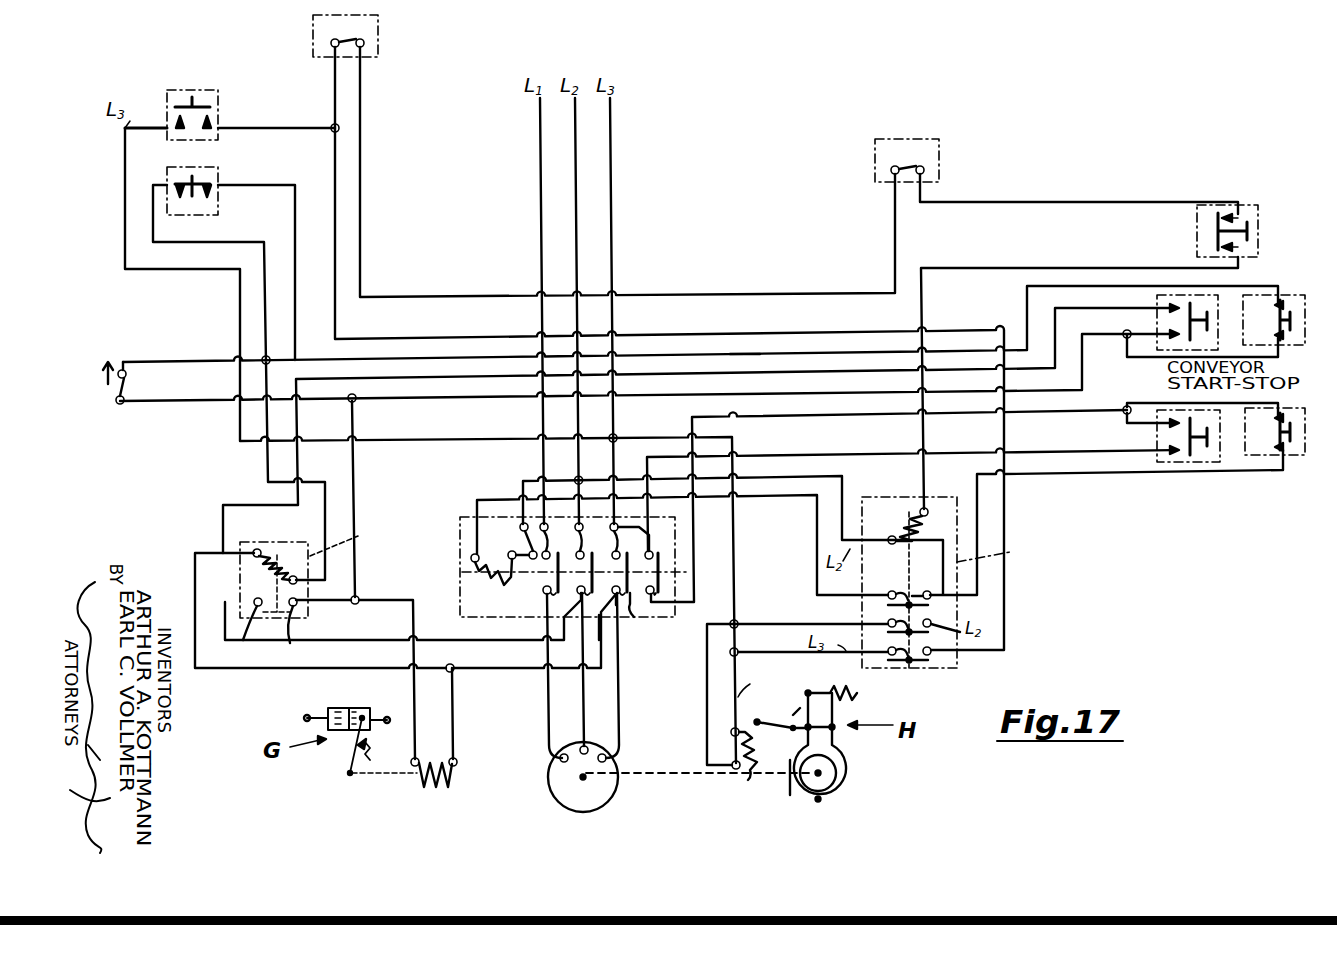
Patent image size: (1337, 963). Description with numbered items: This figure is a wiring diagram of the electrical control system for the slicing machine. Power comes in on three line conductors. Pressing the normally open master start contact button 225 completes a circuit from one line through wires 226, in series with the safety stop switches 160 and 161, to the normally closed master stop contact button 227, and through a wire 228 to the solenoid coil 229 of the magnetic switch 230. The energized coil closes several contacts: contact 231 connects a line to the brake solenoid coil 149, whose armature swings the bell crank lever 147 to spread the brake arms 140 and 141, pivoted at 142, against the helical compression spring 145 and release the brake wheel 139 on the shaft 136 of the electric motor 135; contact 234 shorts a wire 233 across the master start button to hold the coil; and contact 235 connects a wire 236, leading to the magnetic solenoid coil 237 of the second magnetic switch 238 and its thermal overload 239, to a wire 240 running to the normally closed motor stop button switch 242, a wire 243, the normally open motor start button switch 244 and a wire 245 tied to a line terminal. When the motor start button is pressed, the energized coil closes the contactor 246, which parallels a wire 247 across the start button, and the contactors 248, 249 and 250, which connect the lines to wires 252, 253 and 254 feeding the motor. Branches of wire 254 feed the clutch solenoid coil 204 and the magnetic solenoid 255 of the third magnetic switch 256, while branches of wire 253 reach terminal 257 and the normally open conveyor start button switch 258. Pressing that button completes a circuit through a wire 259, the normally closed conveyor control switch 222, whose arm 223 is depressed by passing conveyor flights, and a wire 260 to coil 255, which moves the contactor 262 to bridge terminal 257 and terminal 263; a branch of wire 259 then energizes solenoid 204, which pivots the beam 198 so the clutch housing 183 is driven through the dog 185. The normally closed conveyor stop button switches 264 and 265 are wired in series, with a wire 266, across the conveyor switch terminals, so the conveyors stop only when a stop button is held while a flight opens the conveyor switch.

The electric motor 135 is at (606, 802).
The motor shaft 136 is at (652, 776).
The brake wheel 139 is at (838, 783).
The brake arm 140 is at (790, 798).
The brake arm 141 is at (835, 747).
The pivot 142 is at (821, 801).
The helical compression spring 145 is at (834, 688).
The bell crank lever 147 is at (765, 718).
The brake solenoid coil 149 is at (750, 781).
The safety stop switch 160 is at (312, 24).
The safety stop switch 161 is at (910, 138).
The clutch housing 183 is at (362, 708).
The dog 185 is at (328, 703).
The beam 198 is at (348, 773).
The clutch solenoid coil 204 is at (437, 790).
The conveyor control switch 222 is at (118, 405).
The switch arm 223 is at (104, 362).
The master start contact button 225 is at (220, 100).
The wires 226 is at (268, 130).
The master stop contact button 227 is at (1196, 224).
The wire 228 is at (975, 268).
The solenoid coil 229 is at (912, 510).
The magnetic switch 230 is at (1003, 556).
The contact 231 is at (893, 620).
The wire 233 is at (339, 234).
The contact 234 is at (905, 669).
The contact 235 is at (900, 586).
The wire 236 is at (738, 500).
The magnetic solenoid coil 237 is at (461, 584).
The second magnetic switch 238 is at (458, 527).
The thermal overload 239 is at (521, 540).
The wire 240 is at (1104, 478).
The motor stop button switch 242 is at (1296, 412).
The wire 243 is at (1074, 411).
The motor start button switch 244 is at (1158, 449).
The wire 245 is at (811, 457).
The contactor 246 is at (636, 618).
The wire 247 is at (695, 571).
The contactor 248 is at (543, 599).
The contactor 249 is at (602, 645).
The contactor 250 is at (619, 608).
The wire 252 is at (547, 701).
The wire 253 is at (1064, 312).
The wire 254 is at (196, 551).
The magnetic solenoid 255 is at (267, 549).
The third magnetic switch 256 is at (355, 534).
The terminal 257 is at (245, 633).
The conveyor start button switch 258 is at (1157, 353).
The wire 259 is at (1082, 342).
The wire 260 is at (156, 184).
The contactor 262 is at (308, 633).
The terminal 263 is at (298, 601).
The conveyor stop button switch 264 is at (219, 208).
The conveyor stop button switch 265 is at (1286, 294).
The wire 266 is at (748, 356).